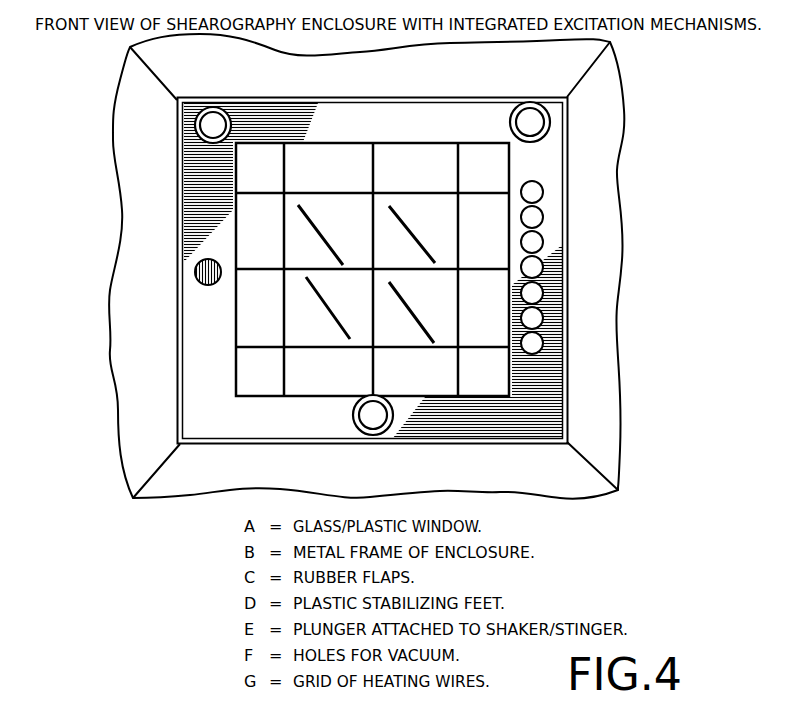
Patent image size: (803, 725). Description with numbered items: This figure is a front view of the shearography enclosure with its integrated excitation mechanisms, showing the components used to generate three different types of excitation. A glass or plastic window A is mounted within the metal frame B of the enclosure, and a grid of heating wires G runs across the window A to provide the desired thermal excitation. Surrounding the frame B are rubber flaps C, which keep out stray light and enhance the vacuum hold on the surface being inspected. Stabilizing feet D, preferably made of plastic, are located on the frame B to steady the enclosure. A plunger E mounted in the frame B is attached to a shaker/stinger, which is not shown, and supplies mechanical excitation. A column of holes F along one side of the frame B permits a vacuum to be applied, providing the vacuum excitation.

The glass or plastic window A is at (346, 230).
The metal frame B is at (381, 132).
The rubber flaps C is at (135, 90).
The stabilizing feet D is at (549, 121).
The plunger E is at (196, 271).
The holes F is at (543, 193).
The heating wires G is at (370, 323).